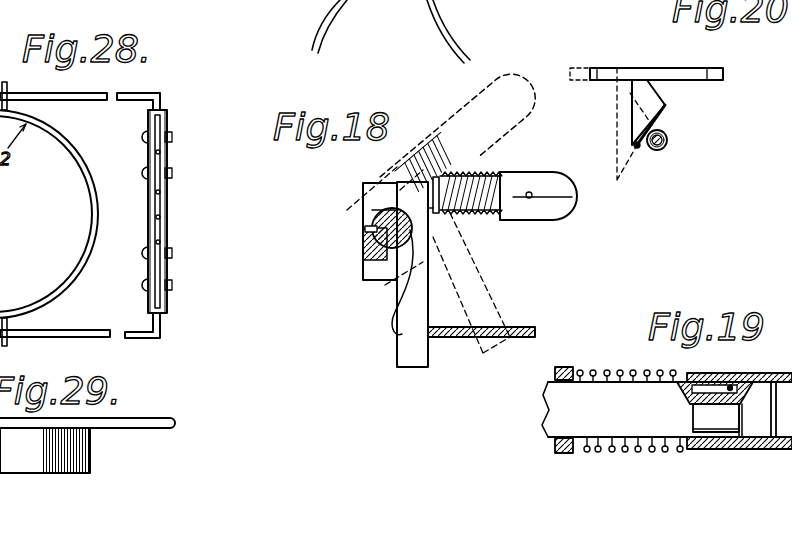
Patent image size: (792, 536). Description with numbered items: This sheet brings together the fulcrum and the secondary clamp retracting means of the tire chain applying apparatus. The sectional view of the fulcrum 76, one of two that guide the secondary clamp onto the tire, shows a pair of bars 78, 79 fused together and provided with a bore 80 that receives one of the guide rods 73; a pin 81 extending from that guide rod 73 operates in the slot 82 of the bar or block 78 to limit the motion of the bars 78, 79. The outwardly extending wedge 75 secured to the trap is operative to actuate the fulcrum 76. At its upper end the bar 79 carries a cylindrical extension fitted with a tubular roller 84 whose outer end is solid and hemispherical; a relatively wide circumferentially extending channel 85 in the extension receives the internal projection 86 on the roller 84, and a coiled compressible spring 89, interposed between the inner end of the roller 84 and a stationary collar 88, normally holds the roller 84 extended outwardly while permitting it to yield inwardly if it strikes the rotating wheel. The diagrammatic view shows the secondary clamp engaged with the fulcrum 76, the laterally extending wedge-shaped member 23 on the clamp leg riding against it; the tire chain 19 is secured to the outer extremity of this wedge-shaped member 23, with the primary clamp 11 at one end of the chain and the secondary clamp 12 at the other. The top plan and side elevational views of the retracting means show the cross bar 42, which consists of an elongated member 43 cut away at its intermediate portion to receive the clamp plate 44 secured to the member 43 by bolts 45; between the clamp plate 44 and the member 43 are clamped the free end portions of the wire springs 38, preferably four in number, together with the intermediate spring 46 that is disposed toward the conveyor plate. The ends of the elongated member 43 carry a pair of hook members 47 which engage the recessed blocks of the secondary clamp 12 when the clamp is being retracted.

In FIG. 20, the primary clamp 11 is at (629, 58).
In FIG. 29, the secondary clamp 12 is at (90, 455).
In FIG. 18, the tire chain 19 is at (433, 175).
In FIG. 20, the wedge-shaped member 23 is at (665, 107).
In FIG. 28, the wire springs 38 is at (161, 153).
In FIG. 28, the cross bar 42 is at (171, 199).
In FIG. 28, the elongated member 43 is at (168, 233).
In FIG. 28, the clamp plate 44 is at (150, 203).
In FIG. 28, the bolts 45 is at (147, 173).
In FIG. 28, the intermediate spring 46 is at (167, 218).
In FIG. 28, the hook members 47 is at (37, 98).
In FIG. 29, the hook members 47 is at (162, 420).
In FIG. 18, the guide rod 73 is at (375, 225).
In FIG. 18, the wedge 75 is at (520, 328).
In FIG. 18, the fulcrum 76 is at (414, 365).
In FIG. 20, the fulcrum 76 is at (675, 143).
In FIG. 18, the bar or block 78 is at (370, 282).
In FIG. 18, the bar 79 is at (407, 300).
In FIG. 18, the bore 80 is at (400, 251).
In FIG. 18, the pin 81 is at (363, 240).
In FIG. 18, the slot 82 is at (377, 212).
In FIG. 18, the tubular roller 84 is at (533, 181).
In FIG. 20, the tubular roller 84 is at (658, 151).
In FIG. 19, the circumferentially extending channel 85 is at (707, 377).
In FIG. 18, the internal projection 86 is at (529, 199).
In FIG. 19, the internal projection 86 is at (732, 386).
In FIG. 19, the stationary collar 88 is at (568, 365).
In FIG. 18, the coiled compressible spring 89 is at (471, 178).
In FIG. 19, the coiled compressible spring 89 is at (584, 400).